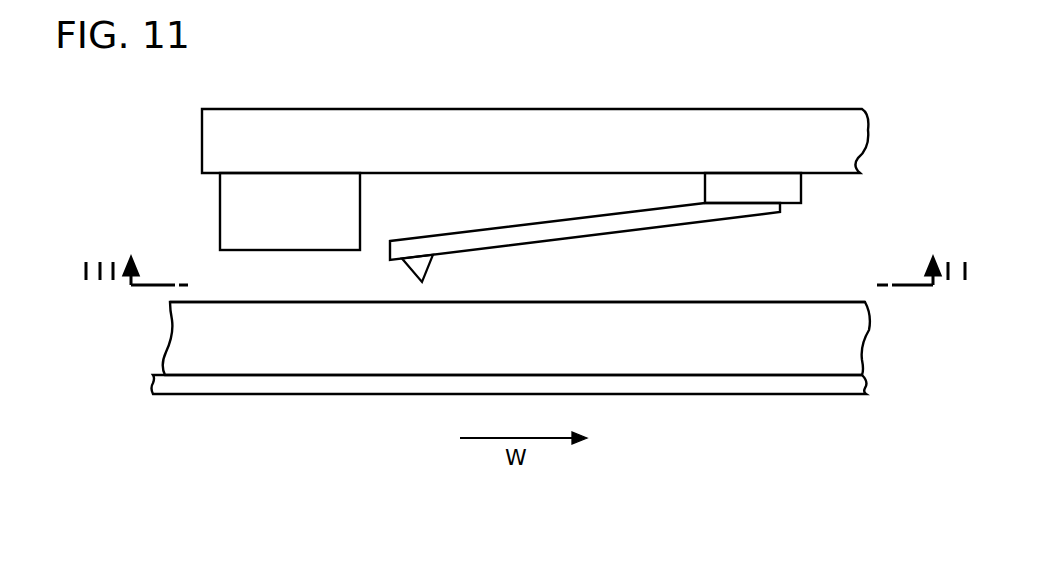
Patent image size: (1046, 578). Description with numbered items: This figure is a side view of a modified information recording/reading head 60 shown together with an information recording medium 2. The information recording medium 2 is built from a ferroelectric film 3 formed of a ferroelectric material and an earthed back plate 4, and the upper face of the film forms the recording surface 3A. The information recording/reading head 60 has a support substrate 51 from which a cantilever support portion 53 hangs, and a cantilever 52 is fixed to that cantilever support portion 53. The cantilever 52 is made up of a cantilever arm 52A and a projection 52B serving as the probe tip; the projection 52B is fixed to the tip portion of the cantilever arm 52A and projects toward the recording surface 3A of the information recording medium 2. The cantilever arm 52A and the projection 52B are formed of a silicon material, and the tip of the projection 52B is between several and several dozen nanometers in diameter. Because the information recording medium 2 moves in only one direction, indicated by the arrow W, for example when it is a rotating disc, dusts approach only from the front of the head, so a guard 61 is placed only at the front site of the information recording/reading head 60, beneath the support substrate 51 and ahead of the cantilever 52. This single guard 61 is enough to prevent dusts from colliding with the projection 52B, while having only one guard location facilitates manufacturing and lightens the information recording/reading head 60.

The information recording medium 2 is at (511, 356).
The ferroelectric film 3 is at (513, 352).
The recording surface 3A is at (755, 301).
The back plate 4 is at (275, 387).
The support substrate 51 is at (408, 121).
The cantilever 52 is at (545, 247).
The cantilever arm 52A is at (677, 222).
The projection 52B is at (418, 278).
The cantilever support portion 53 is at (783, 194).
The information recording/reading head 60 is at (512, 168).
The guard 61 is at (232, 197).